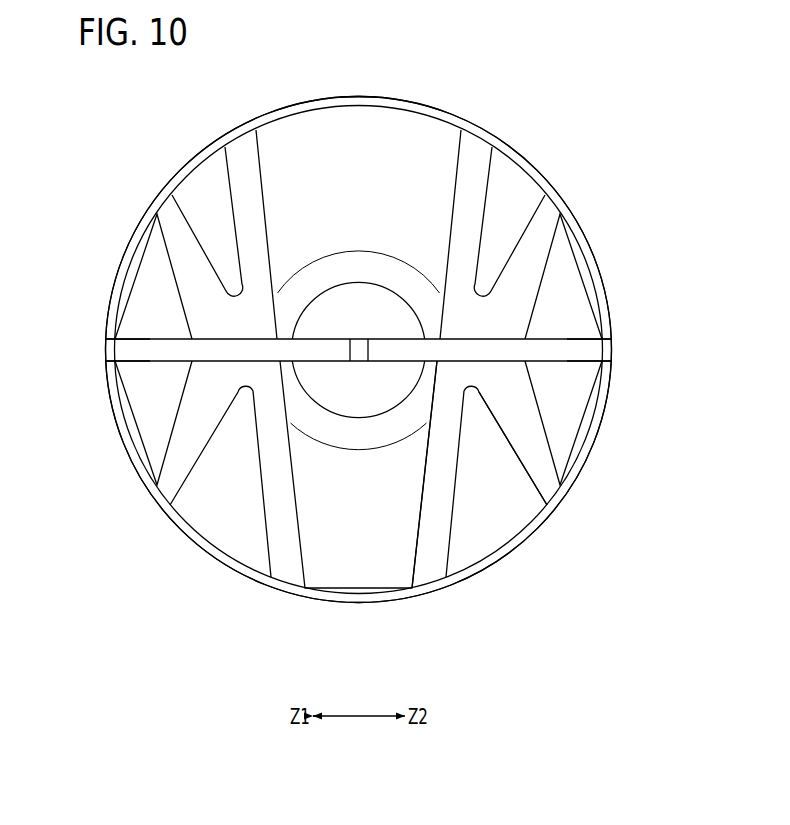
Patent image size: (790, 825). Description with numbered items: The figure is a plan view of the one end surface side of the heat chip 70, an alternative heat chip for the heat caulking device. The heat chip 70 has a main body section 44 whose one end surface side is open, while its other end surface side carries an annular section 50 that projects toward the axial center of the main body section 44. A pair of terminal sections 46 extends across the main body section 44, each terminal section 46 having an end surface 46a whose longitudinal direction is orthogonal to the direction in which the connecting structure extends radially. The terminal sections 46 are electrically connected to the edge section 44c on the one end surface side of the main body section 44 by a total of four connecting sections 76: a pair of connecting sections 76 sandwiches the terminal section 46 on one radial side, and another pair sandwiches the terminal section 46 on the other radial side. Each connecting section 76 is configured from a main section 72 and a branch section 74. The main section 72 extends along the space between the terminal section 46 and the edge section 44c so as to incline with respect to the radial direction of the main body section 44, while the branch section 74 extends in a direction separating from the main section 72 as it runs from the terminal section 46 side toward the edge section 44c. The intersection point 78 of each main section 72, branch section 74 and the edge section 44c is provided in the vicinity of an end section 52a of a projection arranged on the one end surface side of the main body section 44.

The heat chip 70 is at (553, 148).
The main body section 44 is at (356, 607).
The edge section 44c is at (358, 101).
The end section 52a is at (240, 112).
The terminal section 46 is at (160, 338).
The end surface 46a is at (140, 351).
The connecting section 76 is at (272, 186).
The main section 72 is at (438, 468).
The branch section 74 is at (525, 417).
The intersection point 78 is at (233, 134).
The annular section 50 is at (359, 260).